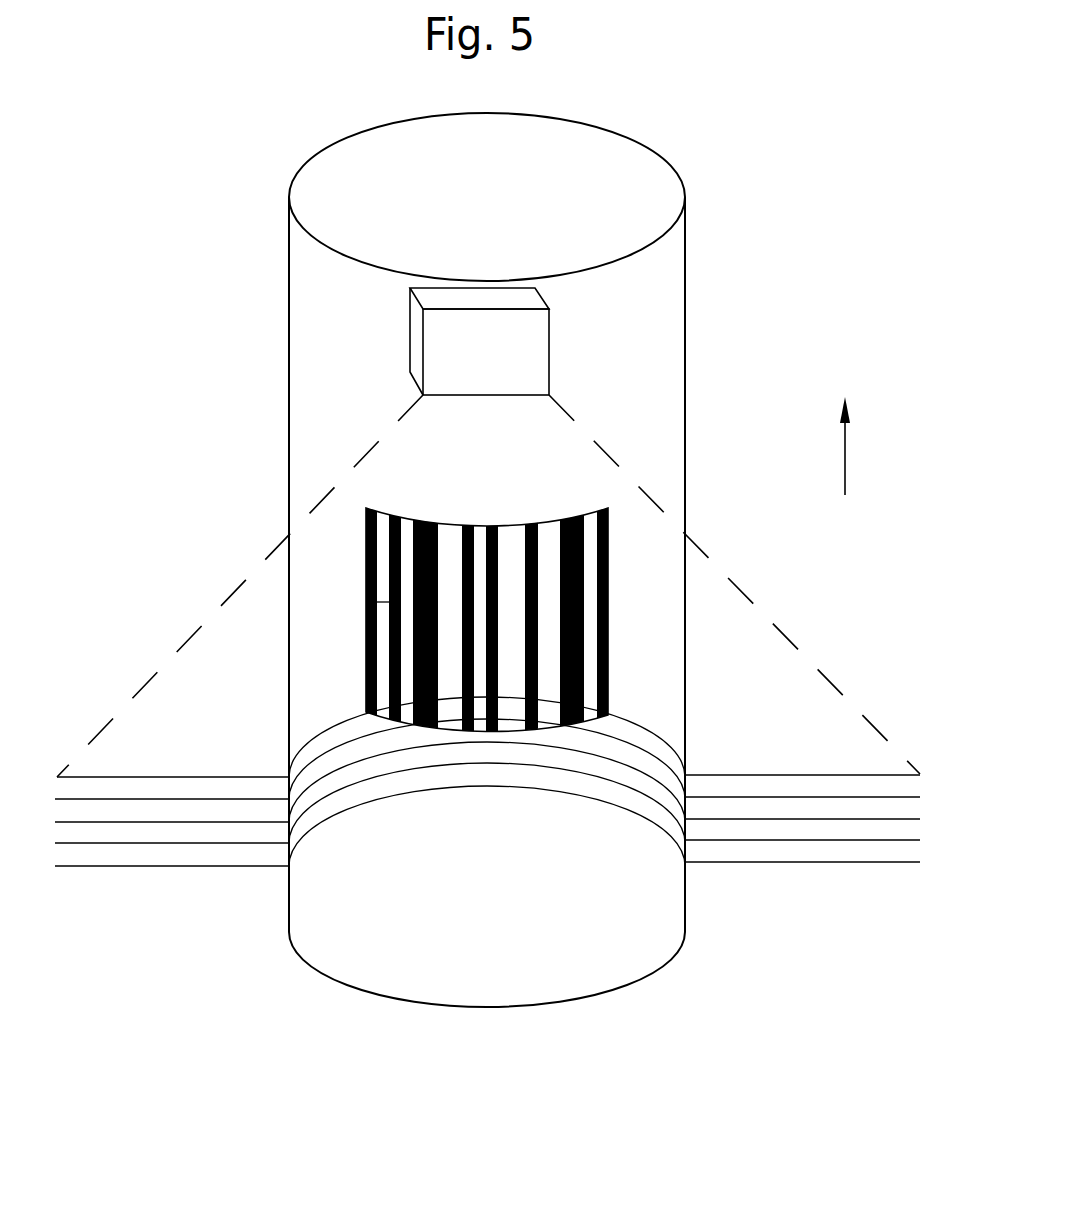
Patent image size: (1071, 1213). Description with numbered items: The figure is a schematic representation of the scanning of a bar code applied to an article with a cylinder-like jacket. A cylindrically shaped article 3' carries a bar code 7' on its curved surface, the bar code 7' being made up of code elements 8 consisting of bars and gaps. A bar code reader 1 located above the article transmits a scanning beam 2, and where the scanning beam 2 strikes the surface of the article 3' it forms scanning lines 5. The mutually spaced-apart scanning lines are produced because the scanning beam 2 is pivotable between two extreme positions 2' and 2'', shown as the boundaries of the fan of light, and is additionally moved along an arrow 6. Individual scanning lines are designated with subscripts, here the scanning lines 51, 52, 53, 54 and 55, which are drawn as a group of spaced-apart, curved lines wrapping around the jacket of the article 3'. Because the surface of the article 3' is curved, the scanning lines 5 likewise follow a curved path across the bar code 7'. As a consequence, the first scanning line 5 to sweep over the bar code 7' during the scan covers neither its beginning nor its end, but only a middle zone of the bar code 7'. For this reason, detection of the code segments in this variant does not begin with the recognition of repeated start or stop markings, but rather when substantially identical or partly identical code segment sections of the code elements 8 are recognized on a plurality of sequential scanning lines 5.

The bar code reader 1 is at (535, 341).
The scanning beam 2 is at (488, 586).
The extreme position of the scanning beam 2' is at (734, 584).
The extreme position of the scanning beam 2'' is at (240, 586).
The cylindrically shaped article 3' is at (508, 560).
The scanning lines 5 is at (487, 770).
The scanning line 51 is at (517, 787).
The scanning line 52 is at (578, 773).
The scanning line 53 is at (631, 767).
The scanning line 54 is at (662, 758).
The scanning line 55 is at (646, 728).
The arrow 6 is at (847, 488).
The bar code 7' is at (482, 593).
The code elements 8 is at (437, 548).